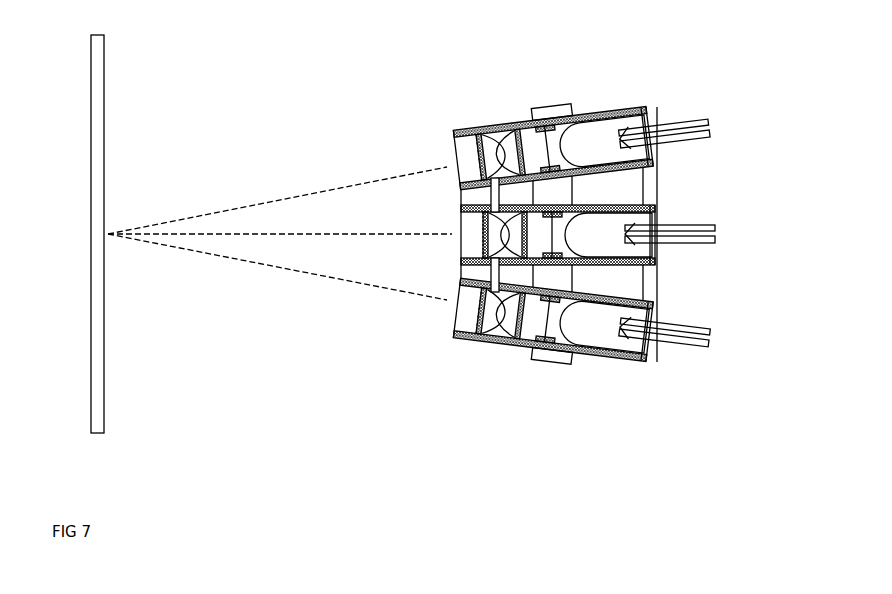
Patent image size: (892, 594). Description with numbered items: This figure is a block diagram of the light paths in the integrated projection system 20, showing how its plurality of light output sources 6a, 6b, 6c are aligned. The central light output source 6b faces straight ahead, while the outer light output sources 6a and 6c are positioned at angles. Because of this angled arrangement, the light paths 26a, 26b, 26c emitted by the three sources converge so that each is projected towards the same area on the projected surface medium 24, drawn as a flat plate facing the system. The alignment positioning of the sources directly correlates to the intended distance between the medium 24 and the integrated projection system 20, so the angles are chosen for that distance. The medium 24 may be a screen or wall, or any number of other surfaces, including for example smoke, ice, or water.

The integrated projection system 20 is at (549, 245).
The projected surface medium 24 is at (104, 392).
The light path 26a is at (425, 172).
The light path 26b is at (428, 234).
The light path 26c is at (427, 298).
The light output source 6a is at (590, 115).
The light output source 6b is at (625, 203).
The light output source 6c is at (600, 355).